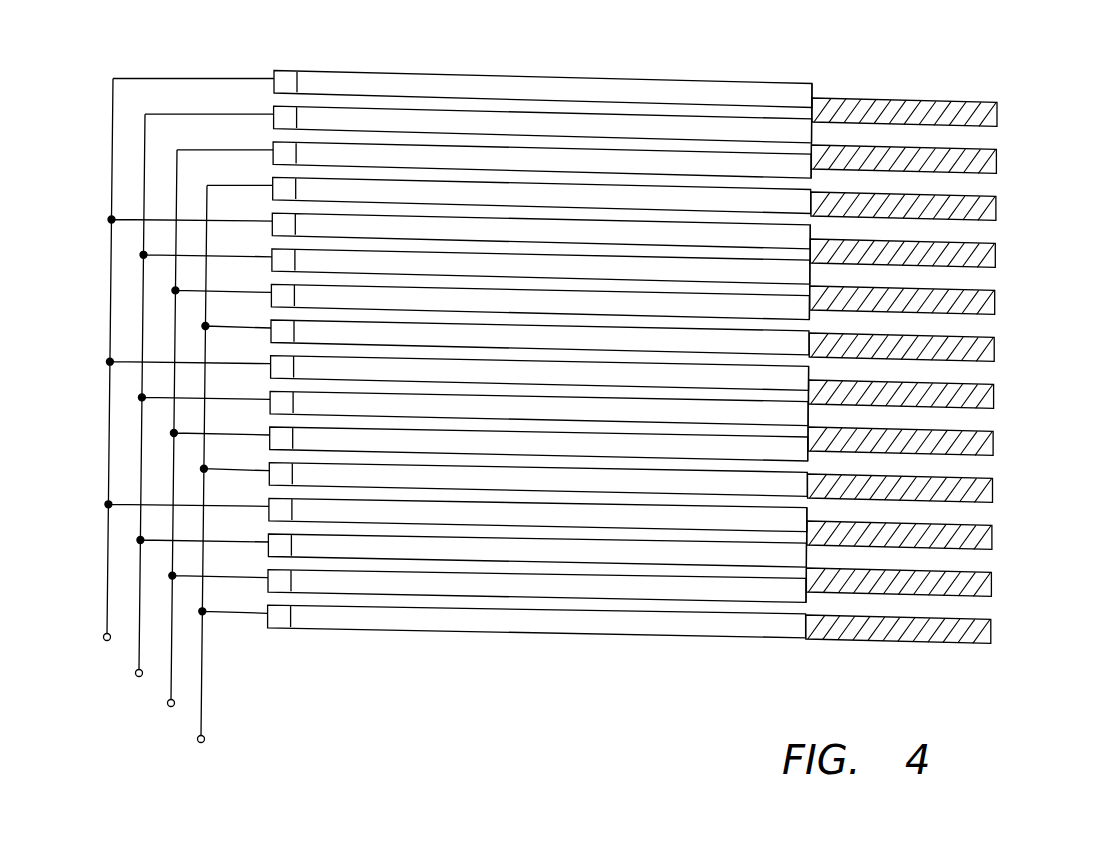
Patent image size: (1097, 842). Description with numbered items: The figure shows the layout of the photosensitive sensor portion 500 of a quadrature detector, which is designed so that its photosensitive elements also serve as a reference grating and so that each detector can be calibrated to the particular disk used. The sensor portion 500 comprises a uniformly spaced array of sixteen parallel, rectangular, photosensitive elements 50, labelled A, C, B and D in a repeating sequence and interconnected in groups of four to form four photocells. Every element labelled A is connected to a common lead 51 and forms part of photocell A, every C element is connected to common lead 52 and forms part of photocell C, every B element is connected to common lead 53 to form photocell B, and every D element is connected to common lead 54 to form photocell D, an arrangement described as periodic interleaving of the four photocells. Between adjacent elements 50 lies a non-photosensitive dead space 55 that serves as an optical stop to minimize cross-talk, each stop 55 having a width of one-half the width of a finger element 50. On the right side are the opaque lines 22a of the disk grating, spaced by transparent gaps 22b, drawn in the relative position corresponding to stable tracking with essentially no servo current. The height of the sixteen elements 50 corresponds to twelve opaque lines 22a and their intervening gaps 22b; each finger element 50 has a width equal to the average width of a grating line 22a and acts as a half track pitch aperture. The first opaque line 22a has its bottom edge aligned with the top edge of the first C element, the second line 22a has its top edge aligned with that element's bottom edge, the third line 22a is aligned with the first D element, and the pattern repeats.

The photosensitive sensor portion 500 is at (558, 59).
The photosensitive element 50 is at (415, 145).
The dead space 55 is at (273, 100).
The common lead 51 is at (107, 600).
The common lead 52 is at (139, 637).
The common lead 53 is at (171, 672).
The common lead 54 is at (201, 706).
The opaque line 22a is at (998, 112).
The gap 22b is at (980, 230).